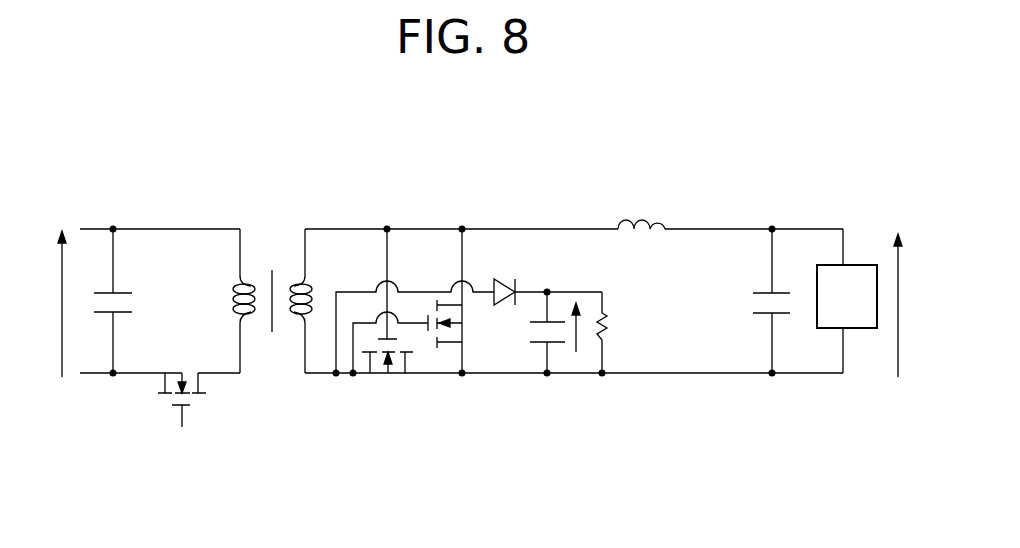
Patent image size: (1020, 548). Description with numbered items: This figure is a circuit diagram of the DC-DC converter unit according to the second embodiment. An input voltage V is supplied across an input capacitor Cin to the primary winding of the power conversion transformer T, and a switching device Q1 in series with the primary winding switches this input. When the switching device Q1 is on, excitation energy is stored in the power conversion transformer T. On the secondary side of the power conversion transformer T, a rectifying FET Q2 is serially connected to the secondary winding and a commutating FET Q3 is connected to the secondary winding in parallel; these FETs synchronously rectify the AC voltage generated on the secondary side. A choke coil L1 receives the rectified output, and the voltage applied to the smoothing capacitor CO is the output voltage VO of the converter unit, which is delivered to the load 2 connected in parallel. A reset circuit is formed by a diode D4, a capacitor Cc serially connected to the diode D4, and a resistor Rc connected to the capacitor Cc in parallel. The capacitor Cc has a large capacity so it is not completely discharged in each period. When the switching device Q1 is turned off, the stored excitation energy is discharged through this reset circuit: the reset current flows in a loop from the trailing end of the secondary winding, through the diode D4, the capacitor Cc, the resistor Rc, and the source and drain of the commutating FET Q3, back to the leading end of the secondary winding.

The load 2 is at (862, 265).
The input voltage V is at (52, 304).
The input capacitor Cin is at (127, 301).
The switching device Q1 is at (169, 400).
The power conversion transformer T is at (272, 285).
The rectifying FET Q2 is at (415, 317).
The commutating FET Q3 is at (470, 301).
The diode D4 is at (548, 277).
The capacitor Cc is at (538, 332).
The resistor Rc is at (616, 332).
The choke coil L1 is at (641, 207).
The smoothing capacitor CO is at (757, 301).
The output voltage VO is at (916, 305).